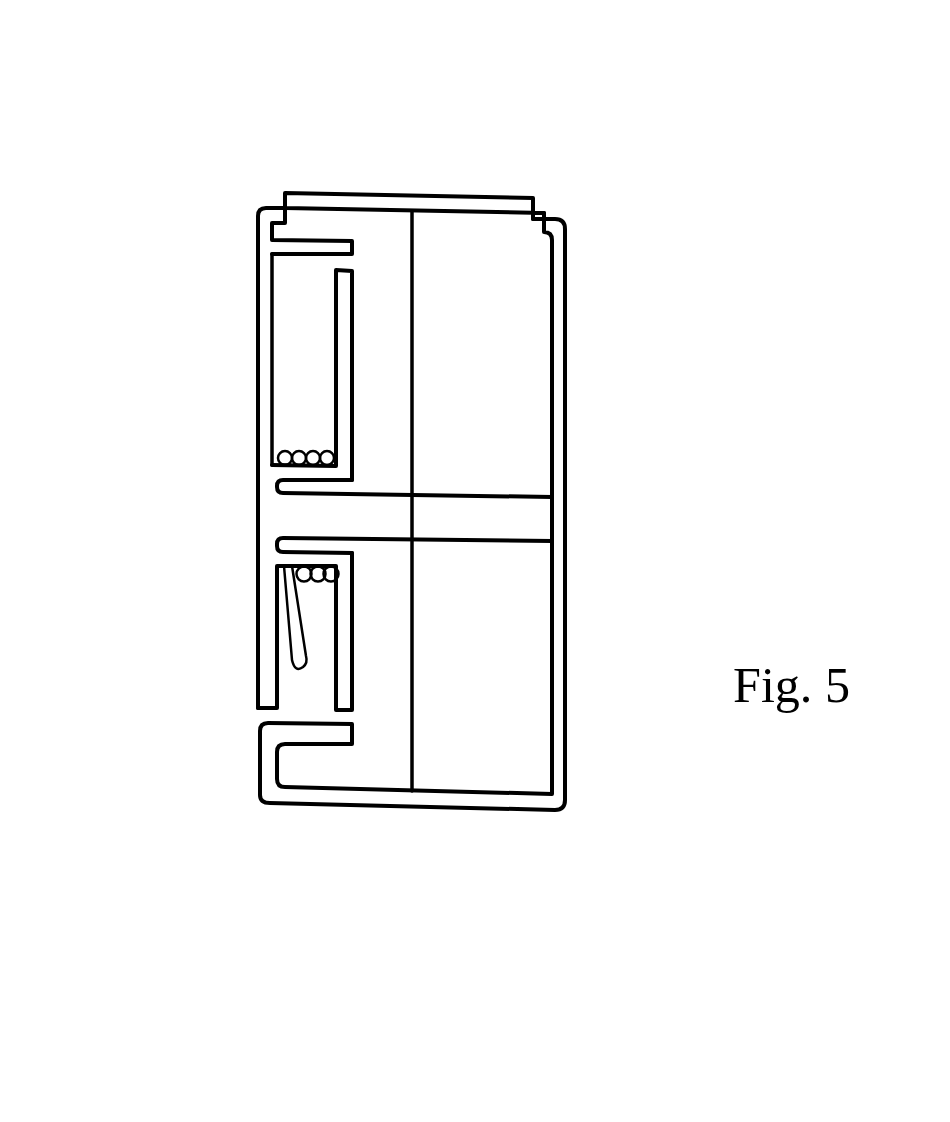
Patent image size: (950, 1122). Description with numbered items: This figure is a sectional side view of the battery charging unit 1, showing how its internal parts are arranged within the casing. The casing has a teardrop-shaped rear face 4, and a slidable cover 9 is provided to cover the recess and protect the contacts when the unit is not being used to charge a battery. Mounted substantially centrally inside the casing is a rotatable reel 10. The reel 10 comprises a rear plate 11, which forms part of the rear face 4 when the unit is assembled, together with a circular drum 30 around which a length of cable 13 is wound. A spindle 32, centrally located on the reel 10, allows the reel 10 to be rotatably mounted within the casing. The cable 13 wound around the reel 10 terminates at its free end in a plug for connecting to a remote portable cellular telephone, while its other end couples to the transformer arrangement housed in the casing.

The battery charging unit 1 is at (660, 280).
The rear face 4 is at (258, 243).
The slidable cover 9 is at (386, 193).
The rotatable reel 10 is at (275, 543).
The rear plate 11 is at (258, 716).
The cable 13 is at (300, 455).
The circular drum 30 is at (335, 465).
The spindle 32 is at (531, 522).